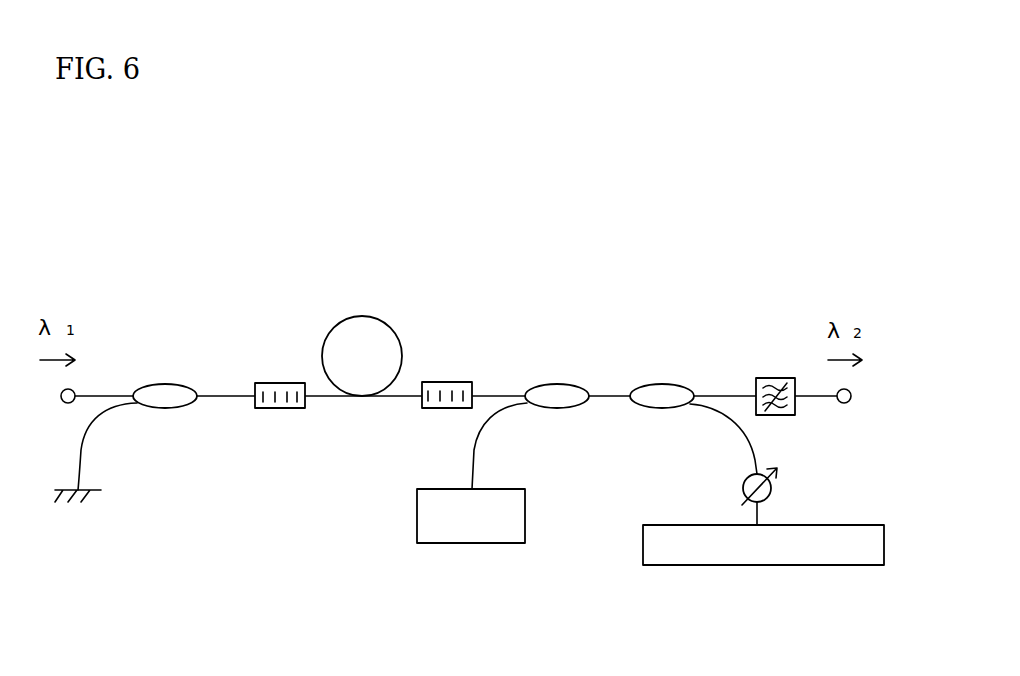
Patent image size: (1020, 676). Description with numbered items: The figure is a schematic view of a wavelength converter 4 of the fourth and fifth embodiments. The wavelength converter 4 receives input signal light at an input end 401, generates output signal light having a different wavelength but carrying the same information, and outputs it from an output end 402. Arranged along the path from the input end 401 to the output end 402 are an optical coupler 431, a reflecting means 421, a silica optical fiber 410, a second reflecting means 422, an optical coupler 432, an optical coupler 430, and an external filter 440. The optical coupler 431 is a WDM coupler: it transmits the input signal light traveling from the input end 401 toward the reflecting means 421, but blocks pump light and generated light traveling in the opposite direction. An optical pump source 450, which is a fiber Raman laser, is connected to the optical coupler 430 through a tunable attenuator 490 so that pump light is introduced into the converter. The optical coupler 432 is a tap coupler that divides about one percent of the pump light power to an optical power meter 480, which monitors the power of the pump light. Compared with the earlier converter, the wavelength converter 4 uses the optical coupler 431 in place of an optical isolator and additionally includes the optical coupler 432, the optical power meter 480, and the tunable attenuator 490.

The wavelength converter 4 is at (241, 243).
The input end 401 is at (66, 404).
The output end 402 is at (845, 405).
The silica optical fiber 410 is at (385, 323).
The reflecting means 421 is at (283, 383).
The reflecting means 422 is at (457, 382).
The optical coupler 430 is at (663, 385).
The optical coupler 431 is at (168, 383).
The optical coupler 432 is at (563, 384).
The external filter 440 is at (792, 377).
The optical pump source 450 is at (822, 566).
The optical power meter 480 is at (497, 543).
The tunable attenuator 490 is at (772, 490).